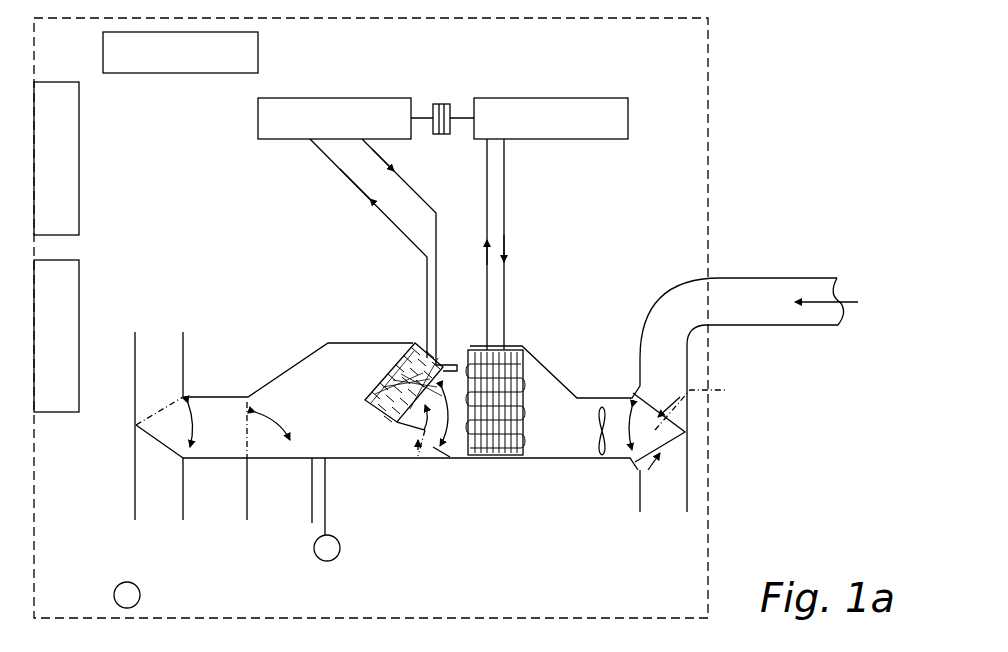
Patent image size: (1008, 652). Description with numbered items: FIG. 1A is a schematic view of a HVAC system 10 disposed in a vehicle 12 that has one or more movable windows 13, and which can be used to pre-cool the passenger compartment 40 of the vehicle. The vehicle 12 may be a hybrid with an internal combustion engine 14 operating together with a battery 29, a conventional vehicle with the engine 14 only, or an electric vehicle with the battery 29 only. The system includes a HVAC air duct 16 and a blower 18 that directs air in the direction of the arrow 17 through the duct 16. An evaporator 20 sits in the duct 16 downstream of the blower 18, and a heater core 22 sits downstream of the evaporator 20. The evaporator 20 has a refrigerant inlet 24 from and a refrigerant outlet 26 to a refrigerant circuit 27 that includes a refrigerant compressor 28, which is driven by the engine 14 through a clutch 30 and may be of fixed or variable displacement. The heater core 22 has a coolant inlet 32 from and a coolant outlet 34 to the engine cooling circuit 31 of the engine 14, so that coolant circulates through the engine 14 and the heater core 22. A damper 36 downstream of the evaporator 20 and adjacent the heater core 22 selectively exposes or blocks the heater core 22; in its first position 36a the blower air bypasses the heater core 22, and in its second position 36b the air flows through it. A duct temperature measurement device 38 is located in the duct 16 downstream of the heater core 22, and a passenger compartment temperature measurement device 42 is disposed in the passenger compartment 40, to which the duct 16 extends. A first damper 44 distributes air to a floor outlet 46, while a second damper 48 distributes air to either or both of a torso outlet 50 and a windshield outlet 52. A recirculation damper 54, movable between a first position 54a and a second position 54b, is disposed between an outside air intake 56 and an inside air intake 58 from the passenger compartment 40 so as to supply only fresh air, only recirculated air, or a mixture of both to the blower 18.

The HVAC system 10 is at (797, 143).
The vehicle 12 is at (229, 270).
The movable windows 13 is at (79, 335).
The internal combustion engine 14 is at (345, 98).
The HVAC air duct 16 is at (290, 368).
The direction of air flow 17 is at (368, 440).
The blower 18 is at (602, 430).
The evaporator 20 is at (523, 415).
The heater core 22 is at (398, 367).
The refrigerant inlet 24 is at (486, 213).
The refrigerant outlet 26 is at (505, 190).
The refrigerant circuit 27 is at (595, 190).
The refrigerant compressor 28 is at (555, 98).
The battery 29 is at (184, 73).
The clutch 30 is at (441, 104).
The engine cooling circuit 31 is at (230, 186).
The coolant inlet 32 is at (418, 200).
The coolant outlet 34 is at (343, 176).
The damper 36 is at (457, 365).
The first position 36a is at (410, 428).
The second position 36b is at (418, 458).
The duct temperature measurement device 38 is at (338, 560).
The passenger compartment 40 is at (140, 592).
The passenger compartment temperature measurement device 42 is at (114, 599).
The first damper 44 is at (268, 458).
The floor outlet 46 is at (278, 473).
The second damper 48 is at (157, 447).
The torso outlet 50 is at (158, 470).
The windshield outlet 52 is at (158, 383).
The recirculation damper 54 is at (667, 440).
The first position 54a is at (715, 406).
The second position 54b is at (658, 462).
The outside air intake 56 is at (662, 383).
The inside air intake 58 is at (661, 488).